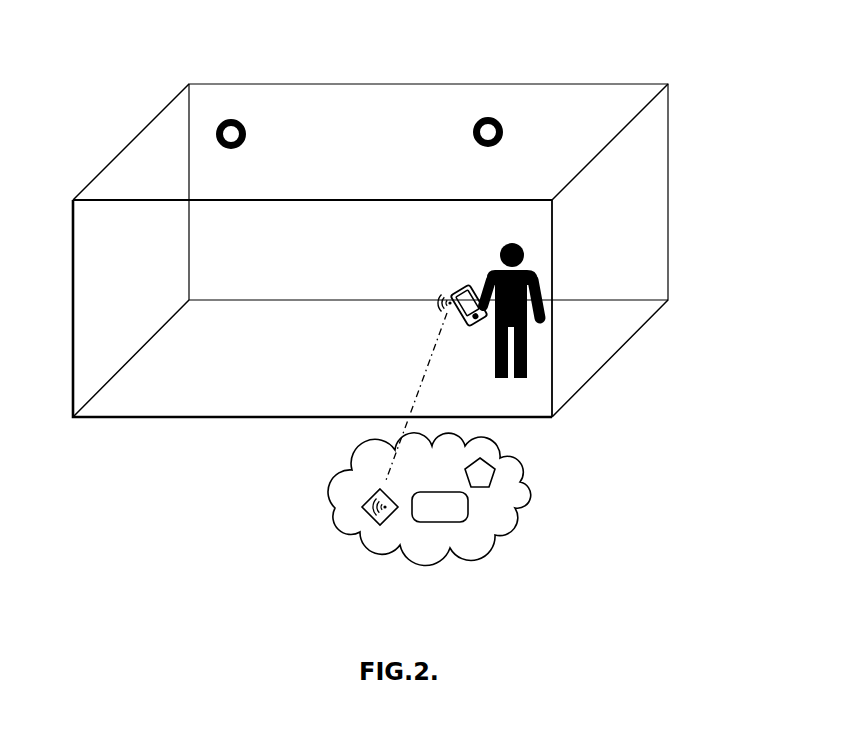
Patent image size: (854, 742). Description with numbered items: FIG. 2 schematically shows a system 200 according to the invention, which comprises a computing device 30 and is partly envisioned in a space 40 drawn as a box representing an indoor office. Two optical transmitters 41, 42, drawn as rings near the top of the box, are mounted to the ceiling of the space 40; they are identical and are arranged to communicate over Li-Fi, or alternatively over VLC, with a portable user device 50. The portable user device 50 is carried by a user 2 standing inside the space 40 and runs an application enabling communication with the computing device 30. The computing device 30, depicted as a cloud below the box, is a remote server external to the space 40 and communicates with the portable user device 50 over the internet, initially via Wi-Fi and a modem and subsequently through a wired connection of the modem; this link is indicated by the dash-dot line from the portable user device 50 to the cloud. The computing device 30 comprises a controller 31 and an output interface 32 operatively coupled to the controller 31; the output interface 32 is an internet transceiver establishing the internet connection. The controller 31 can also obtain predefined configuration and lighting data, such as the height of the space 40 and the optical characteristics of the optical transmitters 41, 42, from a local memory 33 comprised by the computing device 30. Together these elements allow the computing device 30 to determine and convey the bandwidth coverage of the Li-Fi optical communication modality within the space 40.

The user 2 is at (503, 246).
The computing device 30 is at (331, 506).
The controller 31 is at (412, 518).
The output interface 32 is at (389, 492).
The local memory 33 is at (513, 508).
The space 40 is at (122, 418).
The optical transmitter 41 is at (500, 140).
The optical transmitter 42 is at (243, 143).
The portable user device 50 is at (455, 289).
The system 200 is at (184, 527).